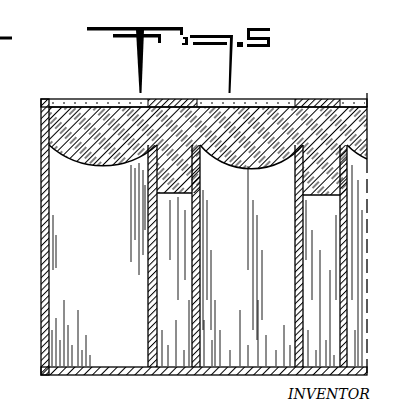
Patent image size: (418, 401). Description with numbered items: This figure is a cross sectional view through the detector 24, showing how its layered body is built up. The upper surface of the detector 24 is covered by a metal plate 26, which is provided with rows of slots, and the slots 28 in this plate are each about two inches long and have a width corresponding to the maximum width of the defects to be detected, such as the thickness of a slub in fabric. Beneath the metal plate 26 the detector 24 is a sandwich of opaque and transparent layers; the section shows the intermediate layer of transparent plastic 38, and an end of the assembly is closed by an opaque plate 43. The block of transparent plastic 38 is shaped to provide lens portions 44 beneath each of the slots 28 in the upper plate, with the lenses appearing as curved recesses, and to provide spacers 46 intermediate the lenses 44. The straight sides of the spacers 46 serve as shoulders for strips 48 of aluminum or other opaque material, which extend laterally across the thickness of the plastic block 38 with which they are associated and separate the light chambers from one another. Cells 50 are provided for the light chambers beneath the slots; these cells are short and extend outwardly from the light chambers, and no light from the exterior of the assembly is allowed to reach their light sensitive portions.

The detector 24 is at (115, 375).
The metal plate 26 is at (180, 89).
The slots 28 is at (99, 89).
The transparent plastic layer 38 is at (360, 134).
The opaque end plate 43 is at (41, 341).
The lens portions 44 is at (104, 161).
The spacers 46 is at (161, 196).
The strips 48 is at (148, 336).
The cells 50 is at (6, 315).